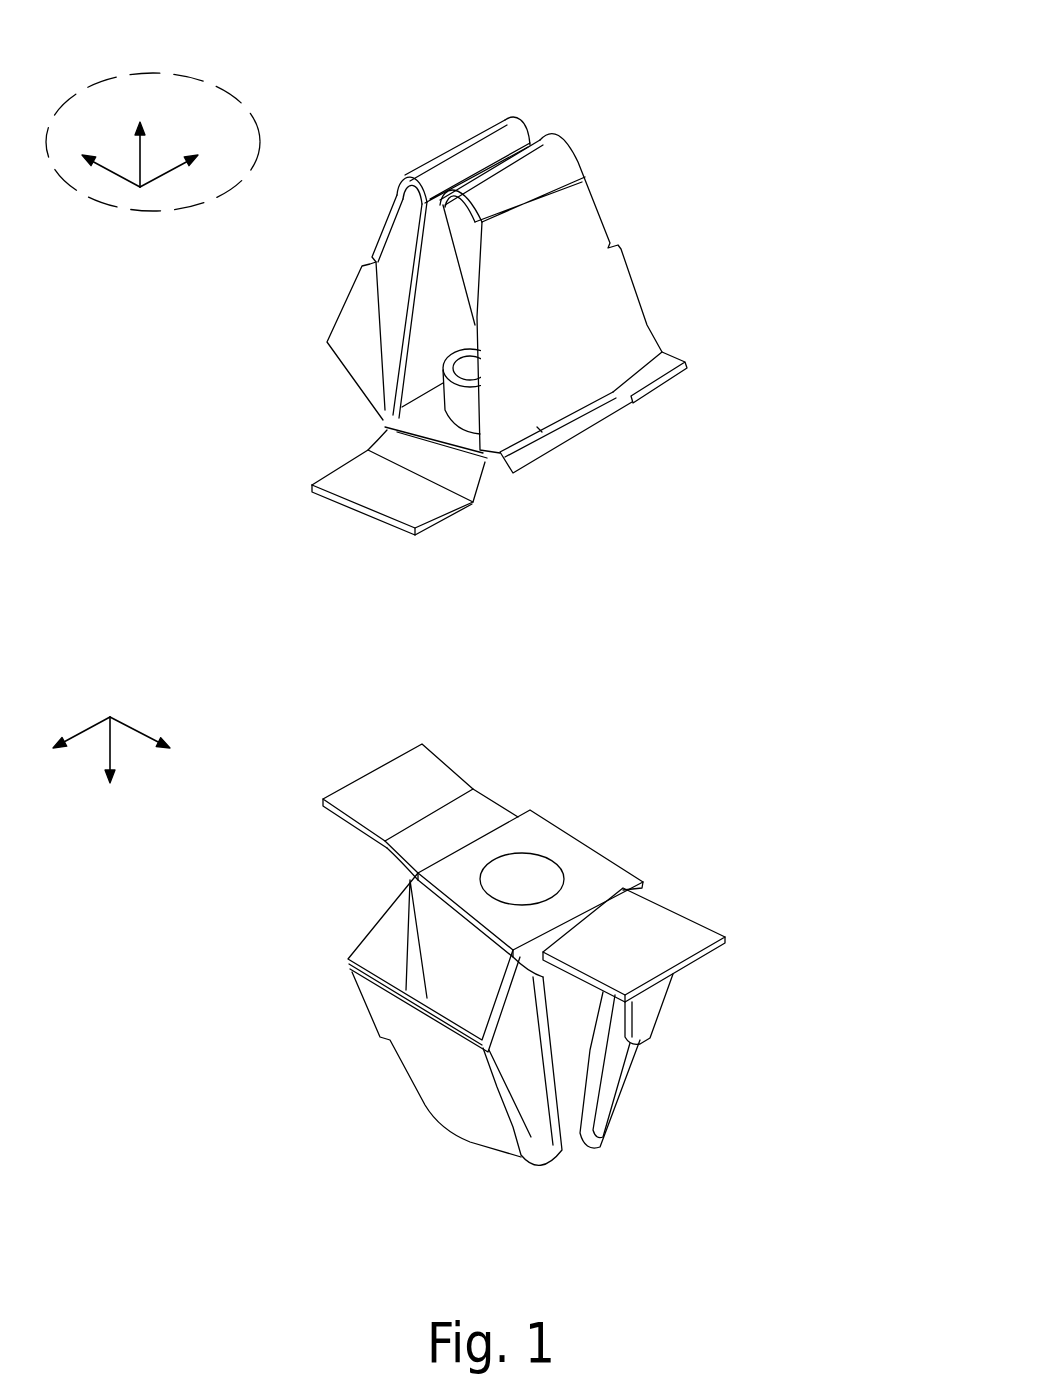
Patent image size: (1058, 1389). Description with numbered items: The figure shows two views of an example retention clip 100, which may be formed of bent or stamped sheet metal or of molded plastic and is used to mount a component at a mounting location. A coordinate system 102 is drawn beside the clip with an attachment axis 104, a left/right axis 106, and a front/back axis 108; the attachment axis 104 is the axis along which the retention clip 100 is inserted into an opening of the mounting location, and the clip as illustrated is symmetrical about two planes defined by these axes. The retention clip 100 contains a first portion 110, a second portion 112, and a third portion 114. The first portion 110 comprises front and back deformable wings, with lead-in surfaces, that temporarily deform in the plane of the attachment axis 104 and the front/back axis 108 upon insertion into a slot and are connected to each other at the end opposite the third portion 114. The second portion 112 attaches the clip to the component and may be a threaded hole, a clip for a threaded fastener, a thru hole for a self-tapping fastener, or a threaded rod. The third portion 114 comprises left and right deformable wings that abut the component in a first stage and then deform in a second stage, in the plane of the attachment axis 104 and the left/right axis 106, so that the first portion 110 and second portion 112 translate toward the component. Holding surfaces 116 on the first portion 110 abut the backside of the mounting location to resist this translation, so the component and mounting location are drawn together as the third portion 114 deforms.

The retention clip 100 is at (830, 48).
The coordinate system 102 is at (242, 180).
The attachment axis 104 is at (143, 148).
The left/right axis 106 is at (172, 168).
The front/back axis 108 is at (113, 170).
The first portion 110 is at (555, 235).
The second portion 112 is at (463, 408).
The third portion 114 is at (657, 368).
The holding surfaces 116 is at (600, 390).